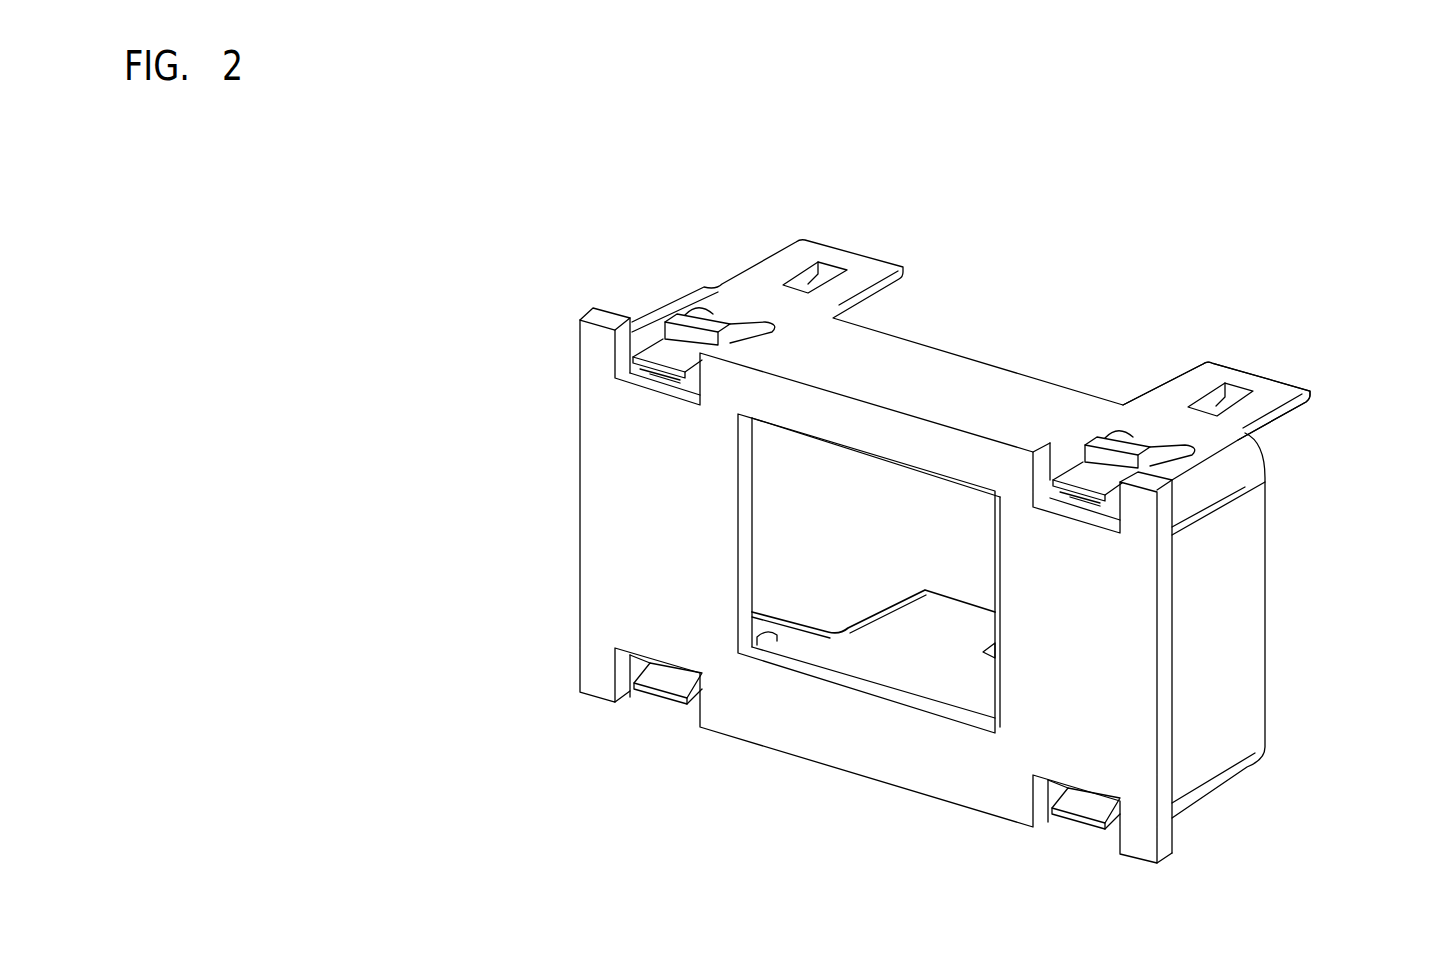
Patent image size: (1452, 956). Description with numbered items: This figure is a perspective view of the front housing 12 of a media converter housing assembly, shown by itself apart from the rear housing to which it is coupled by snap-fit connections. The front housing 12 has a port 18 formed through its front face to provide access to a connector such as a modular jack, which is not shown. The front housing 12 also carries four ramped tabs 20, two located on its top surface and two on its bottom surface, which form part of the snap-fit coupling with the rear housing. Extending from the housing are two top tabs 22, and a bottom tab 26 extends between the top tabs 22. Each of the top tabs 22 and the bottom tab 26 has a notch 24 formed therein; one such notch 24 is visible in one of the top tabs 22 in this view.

The front housing 12 is at (542, 481).
The port 18 is at (838, 597).
The ramped tabs 20 is at (1143, 457).
The top tabs 22 is at (1248, 430).
The notch 24 is at (1249, 389).
The bottom tab 26 is at (919, 622).